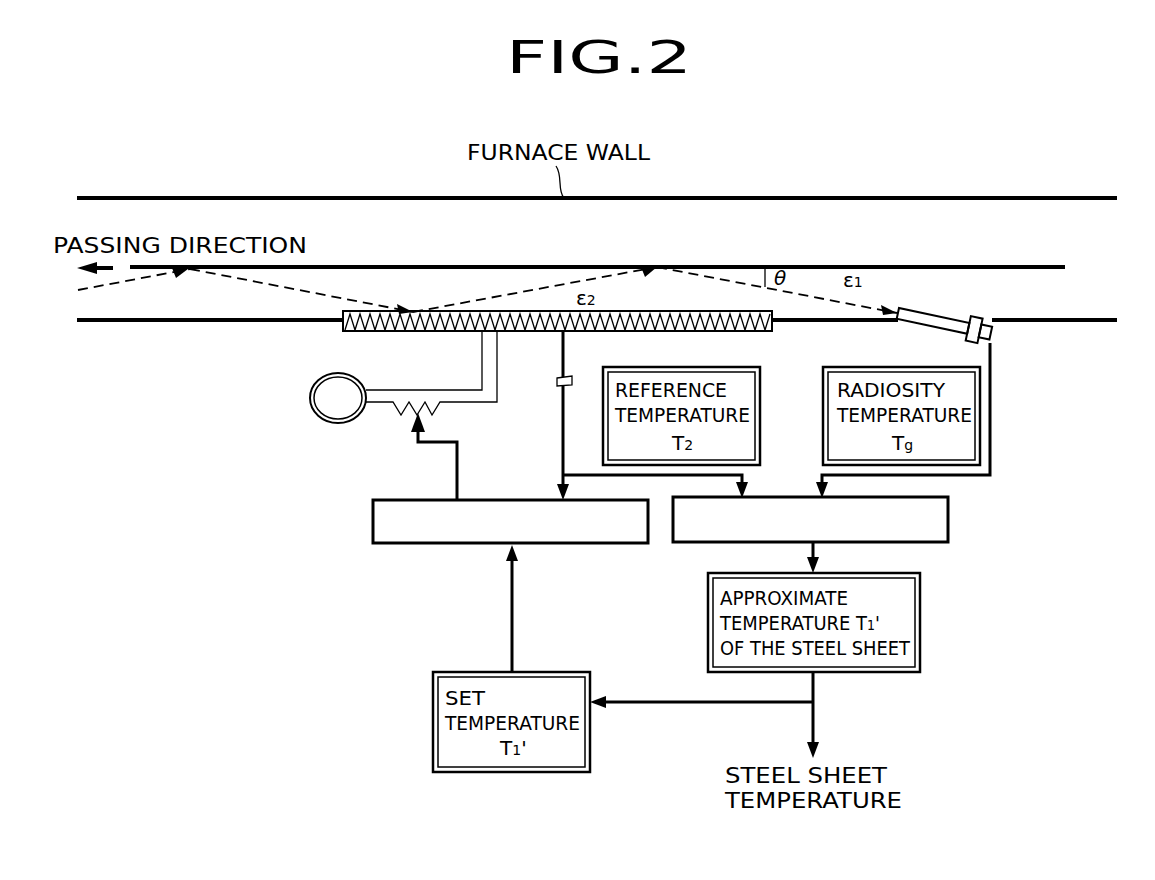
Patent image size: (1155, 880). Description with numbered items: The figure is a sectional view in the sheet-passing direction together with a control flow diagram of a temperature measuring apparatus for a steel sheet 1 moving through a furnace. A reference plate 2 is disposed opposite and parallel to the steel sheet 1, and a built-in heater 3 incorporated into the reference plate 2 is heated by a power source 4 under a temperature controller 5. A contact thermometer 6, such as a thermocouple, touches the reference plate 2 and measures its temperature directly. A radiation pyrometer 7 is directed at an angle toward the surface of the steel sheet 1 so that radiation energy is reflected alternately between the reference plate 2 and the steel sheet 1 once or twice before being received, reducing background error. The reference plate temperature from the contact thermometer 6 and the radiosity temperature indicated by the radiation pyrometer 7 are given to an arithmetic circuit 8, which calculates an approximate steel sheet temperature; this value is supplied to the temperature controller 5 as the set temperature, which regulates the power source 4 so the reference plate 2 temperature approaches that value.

The steel sheet 1 is at (805, 267).
The reference plate 2 is at (370, 312).
The heater 3 is at (370, 333).
The power source 4 is at (310, 405).
The temperature controller 5 is at (373, 521).
The contact thermometer 6 is at (566, 352).
The radiation pyrometer 7 is at (935, 312).
The arithmetic circuit 8 is at (948, 520).